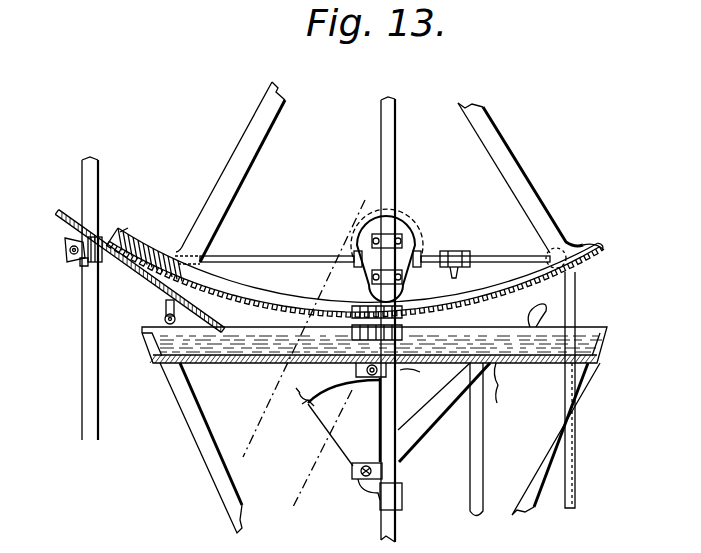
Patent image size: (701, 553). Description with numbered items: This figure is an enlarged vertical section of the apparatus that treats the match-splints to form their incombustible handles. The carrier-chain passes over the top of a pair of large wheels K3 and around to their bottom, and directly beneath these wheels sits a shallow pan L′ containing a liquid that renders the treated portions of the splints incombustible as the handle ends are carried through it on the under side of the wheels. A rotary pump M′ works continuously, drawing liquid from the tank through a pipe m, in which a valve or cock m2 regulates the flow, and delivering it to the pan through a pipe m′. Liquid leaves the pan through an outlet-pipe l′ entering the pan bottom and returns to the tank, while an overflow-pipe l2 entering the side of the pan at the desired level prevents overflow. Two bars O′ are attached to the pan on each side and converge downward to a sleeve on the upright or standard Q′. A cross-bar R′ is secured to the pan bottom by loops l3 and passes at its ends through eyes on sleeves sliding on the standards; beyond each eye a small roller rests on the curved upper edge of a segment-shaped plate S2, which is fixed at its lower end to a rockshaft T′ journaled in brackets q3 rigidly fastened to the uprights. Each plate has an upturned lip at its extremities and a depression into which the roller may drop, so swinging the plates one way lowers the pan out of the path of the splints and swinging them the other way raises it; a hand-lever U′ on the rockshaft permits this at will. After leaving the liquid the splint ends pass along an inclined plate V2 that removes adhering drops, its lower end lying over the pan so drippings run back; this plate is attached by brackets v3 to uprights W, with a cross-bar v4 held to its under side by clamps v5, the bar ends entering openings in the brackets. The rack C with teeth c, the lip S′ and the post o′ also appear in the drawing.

The upright or standard Q′ is at (381, 180).
The pump M′ is at (412, 226).
The pipe m′ is at (298, 256).
The pipe m is at (512, 252).
The valve or cock m2 is at (464, 256).
The curved rack C is at (224, 292).
The rack teeth c is at (120, 236).
The large wheels K3 is at (583, 243).
The left post W is at (82, 393).
The clamps v5 is at (66, 243).
The cross-bar v4 is at (67, 253).
The brackets v3 is at (80, 264).
The inclined plate V2 is at (160, 289).
The pan L′ is at (243, 365).
The bars O′ is at (196, 444).
The cross-bar R′ is at (375, 373).
The fork S′ is at (302, 403).
The segment-shaped plate S2 is at (322, 424).
The rockshaft T′ is at (356, 483).
The brackets q3 is at (402, 506).
The hand-lever U′ is at (454, 428).
The loops l3 is at (408, 372).
The outlet-pipe l′ is at (484, 461).
The overflow-pipe l2 is at (484, 414).
The right post o′ is at (576, 425).